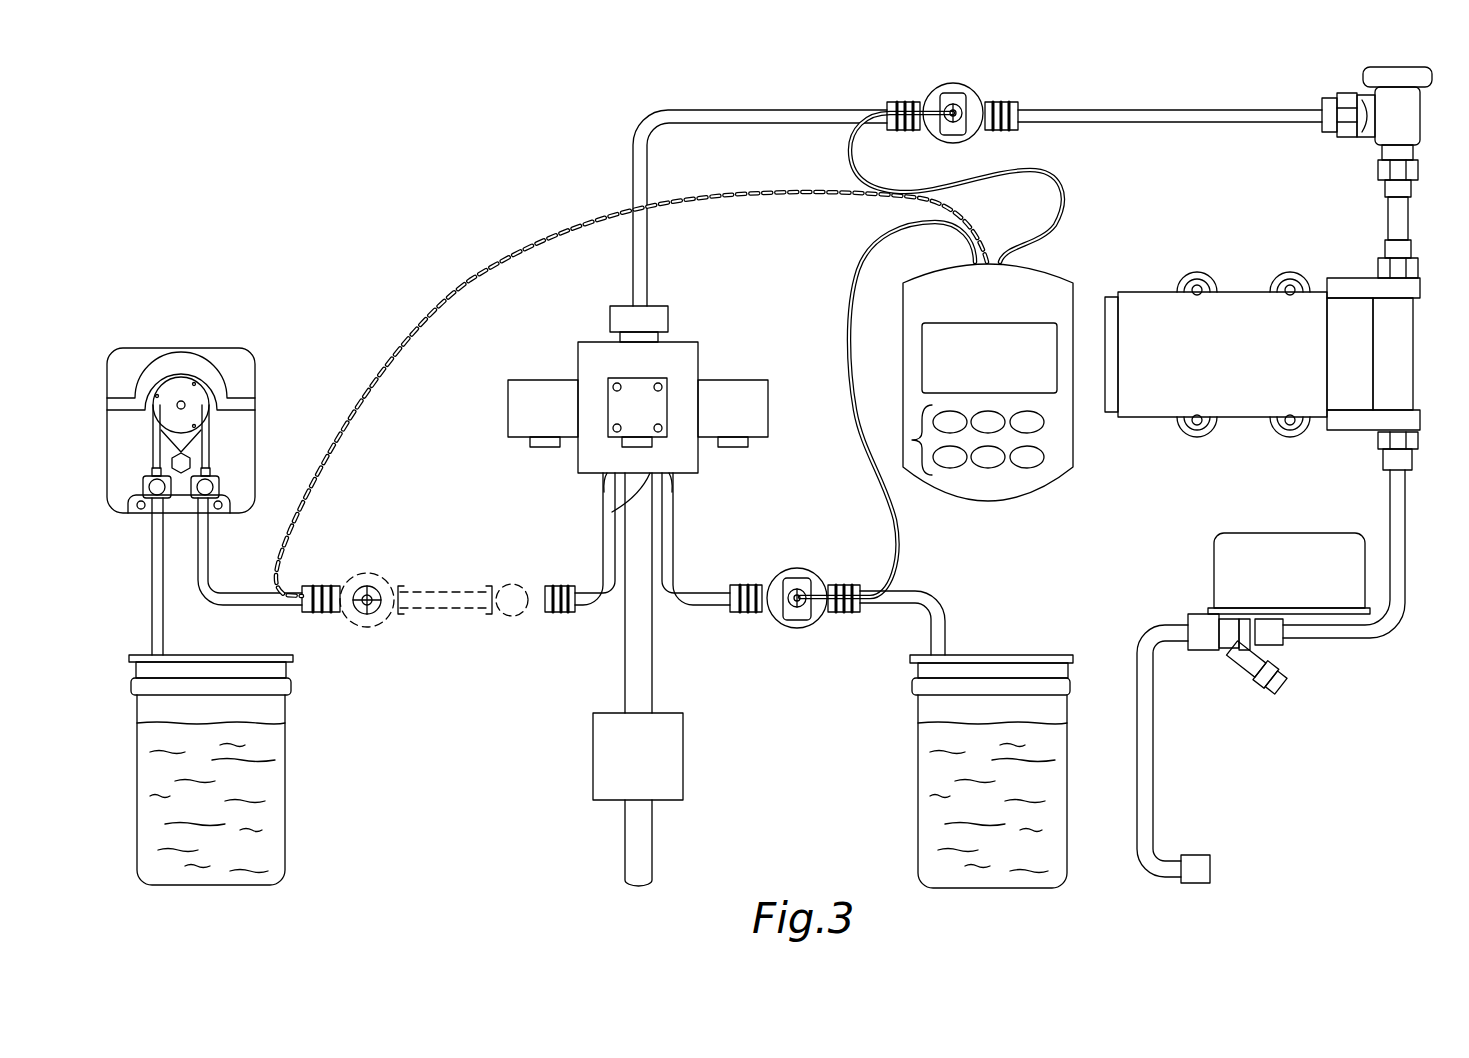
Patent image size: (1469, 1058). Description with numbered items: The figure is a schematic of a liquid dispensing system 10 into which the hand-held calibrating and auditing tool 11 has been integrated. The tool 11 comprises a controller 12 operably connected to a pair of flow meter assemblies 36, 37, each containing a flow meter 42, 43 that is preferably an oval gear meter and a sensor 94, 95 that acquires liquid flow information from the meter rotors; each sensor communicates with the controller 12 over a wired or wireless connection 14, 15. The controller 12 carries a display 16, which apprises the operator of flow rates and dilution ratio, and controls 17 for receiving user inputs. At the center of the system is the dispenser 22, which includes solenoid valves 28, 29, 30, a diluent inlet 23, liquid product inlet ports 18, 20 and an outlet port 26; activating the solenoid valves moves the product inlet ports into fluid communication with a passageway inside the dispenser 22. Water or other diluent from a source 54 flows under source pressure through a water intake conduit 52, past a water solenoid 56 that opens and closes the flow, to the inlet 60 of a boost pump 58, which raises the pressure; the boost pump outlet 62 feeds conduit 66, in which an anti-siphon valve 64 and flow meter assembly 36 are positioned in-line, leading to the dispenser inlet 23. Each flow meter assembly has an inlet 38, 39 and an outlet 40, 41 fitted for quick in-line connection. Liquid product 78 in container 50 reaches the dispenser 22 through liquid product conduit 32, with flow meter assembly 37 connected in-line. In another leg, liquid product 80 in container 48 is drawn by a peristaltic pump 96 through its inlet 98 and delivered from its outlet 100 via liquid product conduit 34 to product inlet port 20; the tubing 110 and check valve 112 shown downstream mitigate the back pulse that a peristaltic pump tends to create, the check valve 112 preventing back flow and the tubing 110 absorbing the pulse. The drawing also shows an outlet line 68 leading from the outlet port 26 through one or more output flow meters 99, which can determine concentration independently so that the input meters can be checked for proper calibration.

The liquid dispensing system 10 is at (456, 165).
The hand-held tool 11 is at (1066, 253).
The controller 12 is at (1055, 290).
The connection 14 is at (1052, 190).
The connection 15 is at (869, 283).
The display 16 is at (934, 370).
The controls 17 is at (912, 440).
The liquid product inlet port 18 is at (679, 489).
The product inlet port 20 is at (600, 489).
The dispenser 22 is at (688, 316).
The inlet 23 is at (618, 320).
The outlet port 26 is at (612, 512).
The solenoid valve 28 is at (765, 410).
The solenoid valve 29 is at (633, 397).
The solenoid valve 30 is at (515, 408).
The liquid product conduit 32 is at (680, 525).
The liquid product conduit 34 is at (601, 548).
The flow meter assembly 36 is at (975, 94).
The flow meter assembly 37 is at (797, 550).
The inlet 38 is at (1018, 120).
The inlet 39 is at (856, 606).
The outlet 40 is at (888, 113).
The outlet 41 is at (735, 612).
The flow meter 42 is at (936, 95).
The flow meter 43 is at (776, 588).
The liquid product container 48 is at (284, 712).
The liquid product container 50 is at (1067, 709).
The water intake conduit 52 is at (1406, 218).
The water or diluent source 54 is at (1203, 856).
The water solenoid 56 is at (1248, 666).
The boost pump 58 is at (1228, 371).
The inlet 60 is at (1410, 430).
The outlet 62 is at (1410, 277).
The anti-siphon valve 64 is at (1400, 122).
The conduit 66 is at (656, 140).
The tube 68 is at (625, 672).
The liquid product 78 is at (948, 803).
The liquid product 80 is at (262, 787).
The sensor 94 is at (950, 128).
The sensor 95 is at (801, 608).
The peristaltic pump 96 is at (171, 349).
The inlet 98 is at (130, 576).
The flow meter 99 is at (595, 755).
The outlet 100 is at (210, 508).
The tubing 110 is at (428, 608).
The check valve 112 is at (500, 582).